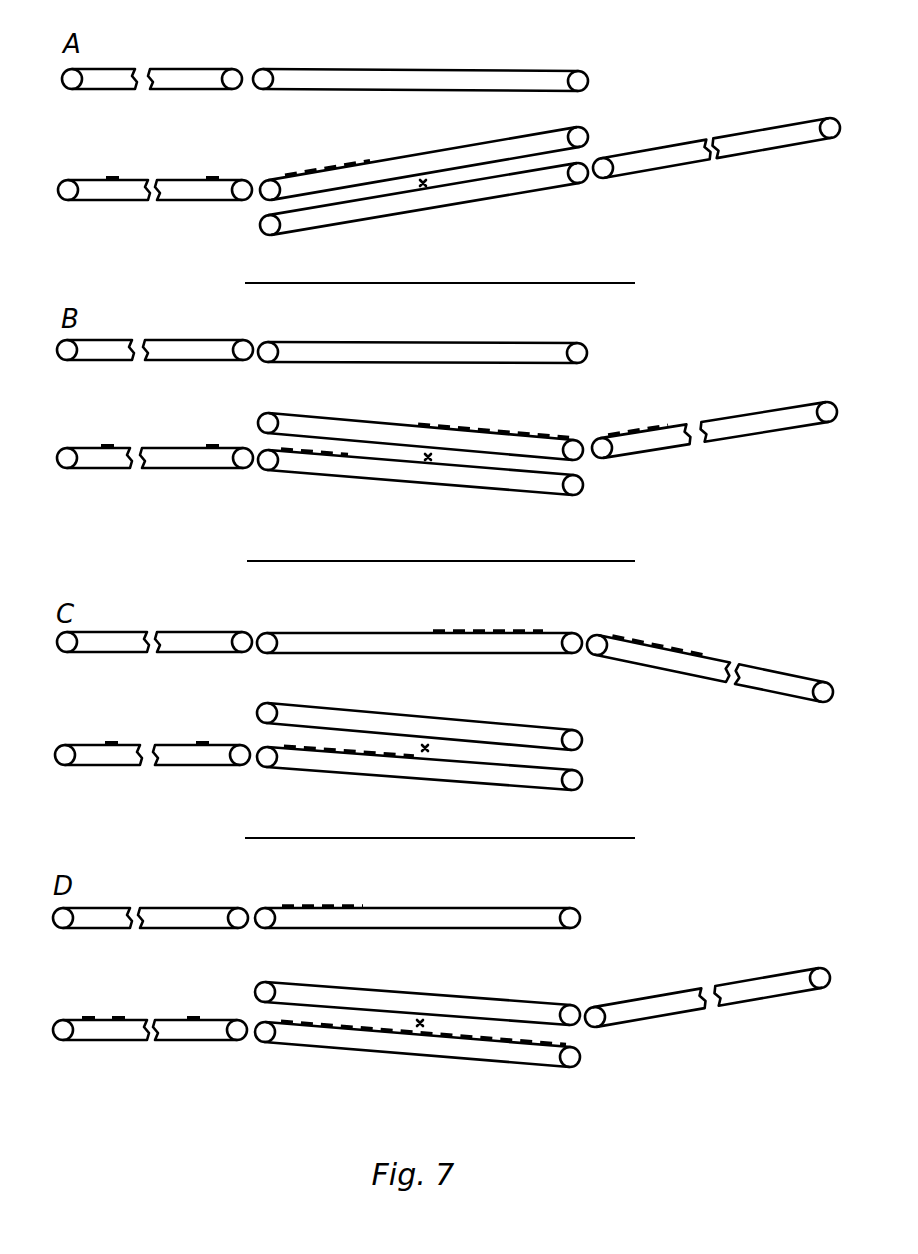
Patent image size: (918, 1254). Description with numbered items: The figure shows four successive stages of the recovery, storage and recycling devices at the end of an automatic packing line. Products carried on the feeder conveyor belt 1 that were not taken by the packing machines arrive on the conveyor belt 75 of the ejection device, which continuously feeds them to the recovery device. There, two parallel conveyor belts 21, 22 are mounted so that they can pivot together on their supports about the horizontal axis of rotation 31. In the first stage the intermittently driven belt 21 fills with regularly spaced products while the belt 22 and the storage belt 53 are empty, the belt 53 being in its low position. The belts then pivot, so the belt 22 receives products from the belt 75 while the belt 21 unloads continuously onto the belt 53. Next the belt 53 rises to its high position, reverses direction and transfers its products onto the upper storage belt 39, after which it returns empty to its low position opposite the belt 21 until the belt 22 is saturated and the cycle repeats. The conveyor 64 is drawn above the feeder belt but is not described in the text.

In FIG. 7A, the feeder conveyor belt 1 is at (155, 192).
In FIG. 7B, the feeder conveyor belt 1 is at (155, 457).
In FIG. 7C, the feeder conveyor belt 1 is at (152, 743).
In FIG. 7D, the feeder conveyor belt 1 is at (150, 1033).
In FIG. 7A, the conveyor belt of the ejection device 75 is at (190, 180).
In FIG. 7B, the conveyor belt of the ejection device 75 is at (180, 448).
In FIG. 7C, the conveyor belt of the ejection device 75 is at (178, 745).
In FIG. 7D, the conveyor belt of the ejection device 75 is at (175, 1020).
In FIG. 7A, the upper feed conveyor 64 is at (195, 70).
In FIG. 7B, the upper feed conveyor 64 is at (185, 340).
In FIG. 7C, the upper feed conveyor 64 is at (190, 632).
In FIG. 7D, the upper feed conveyor 64 is at (170, 907).
In FIG. 7A, the conveyor belt of the storage device 39 is at (437, 80).
In FIG. 7B, the conveyor belt of the storage device 39 is at (432, 341).
In FIG. 7C, the conveyor belt of the storage device 39 is at (375, 632).
In FIG. 7D, the conveyor belt of the storage device 39 is at (445, 907).
In FIG. 7A, the conveyor belt of the recovery device 21 is at (385, 156).
In FIG. 7B, the conveyor belt of the recovery device 21 is at (400, 424).
In FIG. 7C, the conveyor belt of the recovery device 21 is at (468, 722).
In FIG. 7D, the conveyor belt of the recovery device 21 is at (458, 997).
In FIG. 7A, the conveyor belt of the recovery device 22 is at (518, 199).
In FIG. 7B, the conveyor belt of the recovery device 22 is at (348, 479).
In FIG. 7C, the conveyor belt of the recovery device 22 is at (360, 776).
In FIG. 7D, the conveyor belt of the recovery device 22 is at (360, 1056).
In FIG. 7A, the axis of horizontal rotation 31 is at (422, 186).
In FIG. 7B, the axis of horizontal rotation 31 is at (437, 461).
In FIG. 7C, the axis of horizontal rotation 31 is at (437, 756).
In FIG. 7D, the axis of horizontal rotation 31 is at (432, 1029).
In FIG. 7A, the conveyor belt of the storage device 53 is at (662, 160).
In FIG. 7B, the conveyor belt of the storage device 53 is at (710, 421).
In FIG. 7C, the conveyor belt of the storage device 53 is at (715, 660).
In FIG. 7D, the conveyor belt of the storage device 53 is at (685, 990).